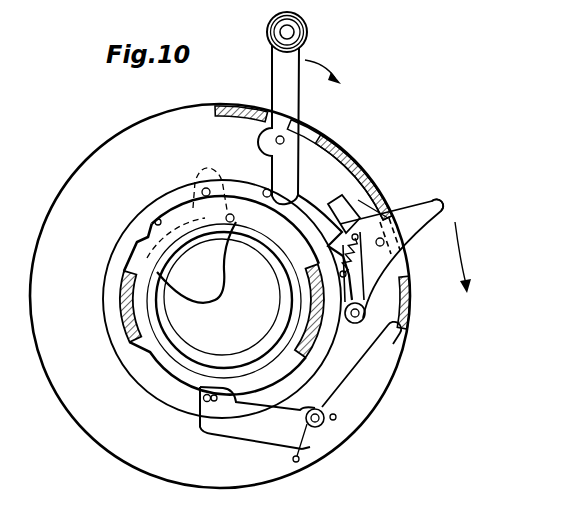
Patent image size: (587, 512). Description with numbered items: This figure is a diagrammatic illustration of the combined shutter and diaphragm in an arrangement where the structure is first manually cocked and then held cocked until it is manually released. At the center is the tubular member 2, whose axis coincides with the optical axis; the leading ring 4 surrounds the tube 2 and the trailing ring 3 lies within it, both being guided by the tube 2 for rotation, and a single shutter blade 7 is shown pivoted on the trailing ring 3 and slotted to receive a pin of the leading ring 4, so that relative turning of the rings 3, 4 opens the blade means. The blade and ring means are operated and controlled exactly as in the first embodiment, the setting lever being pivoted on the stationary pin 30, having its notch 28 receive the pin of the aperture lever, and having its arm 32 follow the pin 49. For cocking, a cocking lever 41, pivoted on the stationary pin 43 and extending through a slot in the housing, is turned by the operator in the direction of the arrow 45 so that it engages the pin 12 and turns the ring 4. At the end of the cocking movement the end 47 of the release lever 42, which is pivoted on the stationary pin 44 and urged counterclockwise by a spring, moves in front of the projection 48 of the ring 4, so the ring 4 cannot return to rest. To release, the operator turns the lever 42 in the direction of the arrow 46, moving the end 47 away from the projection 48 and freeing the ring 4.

The tubular member 2 is at (306, 300).
The trailing ring means 3 is at (273, 356).
The leading ring means 4 is at (176, 198).
The shutter blade 7 is at (200, 289).
The pin 12 is at (265, 189).
The notch 28 is at (206, 399).
The stationary pin 30 is at (324, 423).
The arm 32 is at (372, 362).
The cocking lever 41 is at (292, 103).
The release lever 42 is at (443, 204).
The stationary pin 43 is at (287, 133).
The stationary pin 44 is at (391, 248).
The arrow 45 is at (320, 65).
The arrow 46 is at (464, 258).
The end of the release lever 47 is at (343, 212).
The projection of the ring 48 is at (366, 221).
The pin 49 is at (362, 313).